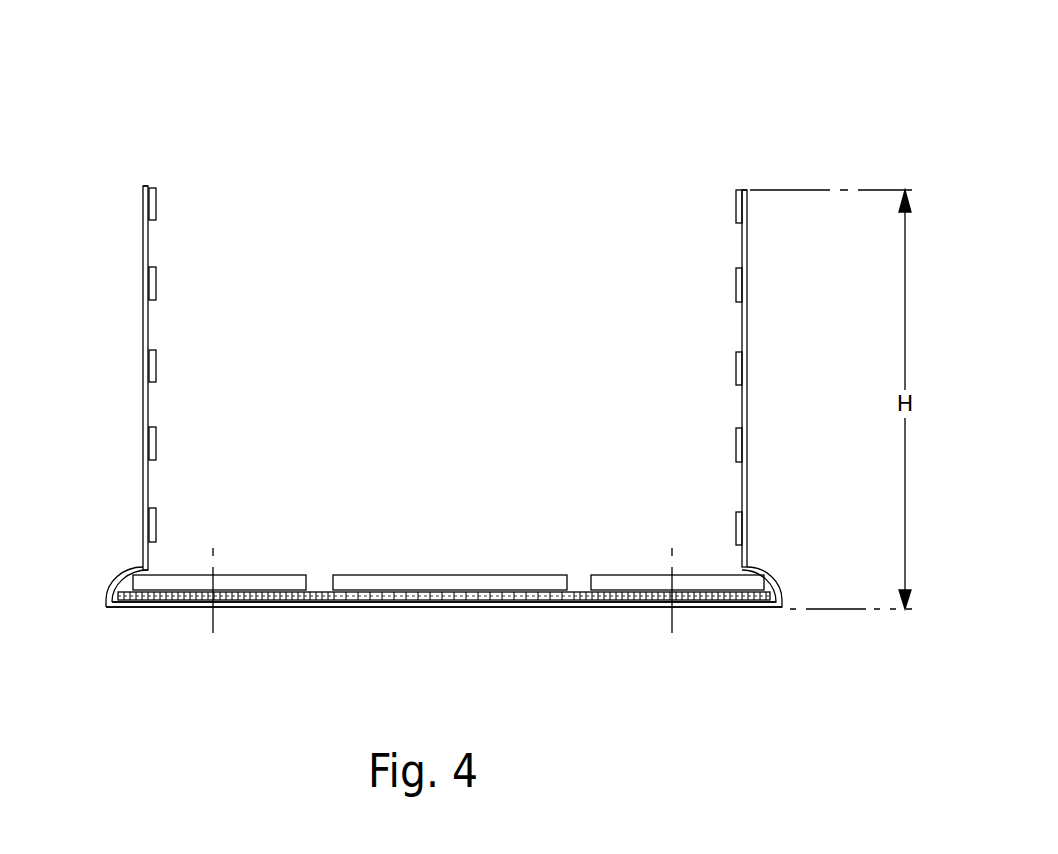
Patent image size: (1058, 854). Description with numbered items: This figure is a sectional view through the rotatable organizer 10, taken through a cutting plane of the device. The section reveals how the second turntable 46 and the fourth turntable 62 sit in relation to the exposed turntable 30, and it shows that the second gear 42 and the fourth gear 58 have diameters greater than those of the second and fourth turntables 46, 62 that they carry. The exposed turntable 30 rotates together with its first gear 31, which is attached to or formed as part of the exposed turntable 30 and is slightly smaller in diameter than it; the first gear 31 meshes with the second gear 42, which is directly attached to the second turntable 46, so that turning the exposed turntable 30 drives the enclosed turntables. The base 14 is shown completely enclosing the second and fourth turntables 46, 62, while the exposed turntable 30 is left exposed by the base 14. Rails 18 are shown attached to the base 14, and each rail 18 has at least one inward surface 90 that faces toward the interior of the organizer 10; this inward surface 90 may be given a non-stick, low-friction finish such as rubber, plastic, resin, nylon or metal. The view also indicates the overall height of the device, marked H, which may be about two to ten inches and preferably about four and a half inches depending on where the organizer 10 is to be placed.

The rotatable organizer 10 is at (795, 91).
The base 14 is at (113, 578).
The rail 18 is at (148, 186).
The exposed turntable 30 is at (483, 583).
The first gear 31 is at (482, 598).
The second gear 42 is at (622, 604).
The second turntable 46 is at (750, 583).
The fourth gear 58 is at (138, 603).
The fourth turntable 62 is at (187, 587).
The inward surface 90 is at (157, 211).